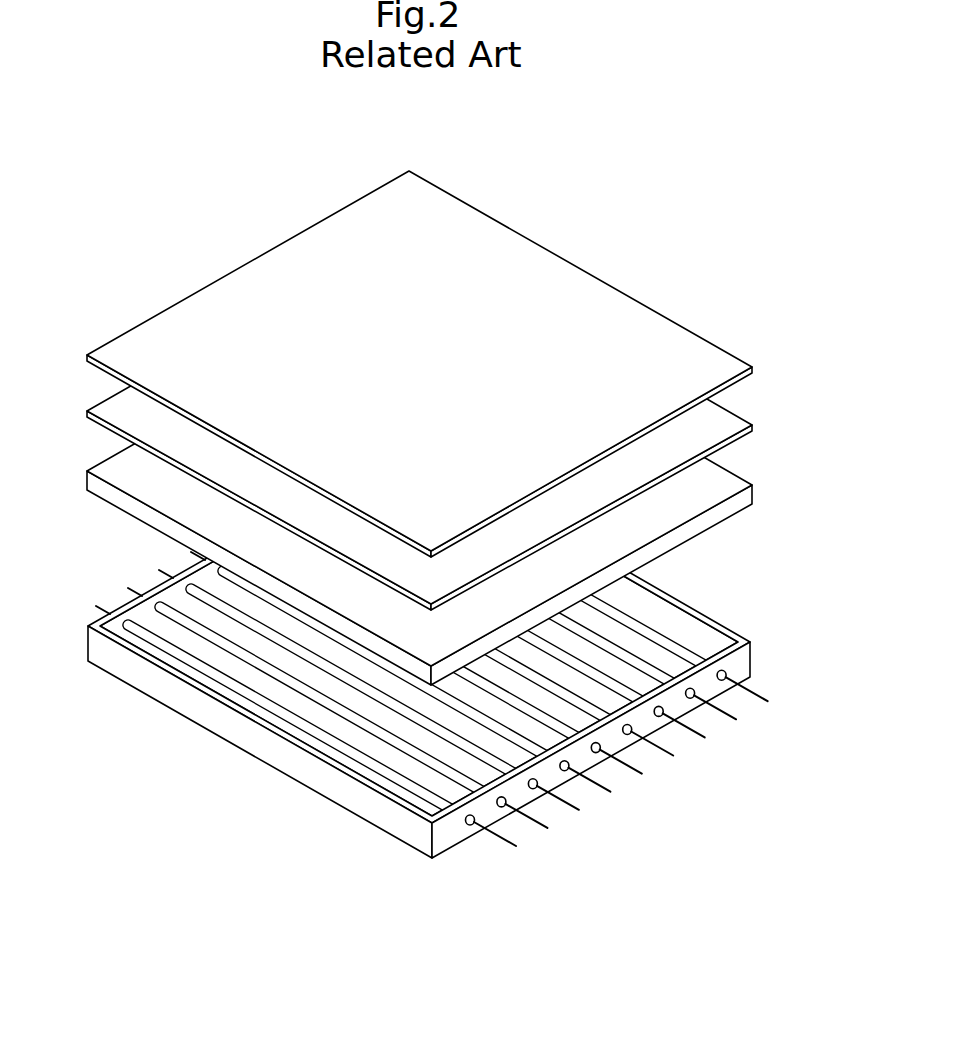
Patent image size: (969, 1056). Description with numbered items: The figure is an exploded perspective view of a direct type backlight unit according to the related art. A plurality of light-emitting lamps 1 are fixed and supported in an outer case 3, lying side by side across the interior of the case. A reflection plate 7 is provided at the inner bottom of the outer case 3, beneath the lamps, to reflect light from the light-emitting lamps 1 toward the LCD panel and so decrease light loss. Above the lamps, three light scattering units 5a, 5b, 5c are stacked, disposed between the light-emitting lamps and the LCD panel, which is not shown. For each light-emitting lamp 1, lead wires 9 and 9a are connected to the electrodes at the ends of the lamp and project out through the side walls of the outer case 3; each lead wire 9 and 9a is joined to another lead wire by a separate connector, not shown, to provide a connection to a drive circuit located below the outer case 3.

The light-emitting lamp 1 is at (312, 730).
The outer case 3 is at (745, 662).
The light scattering unit 5a is at (752, 492).
The light scattering unit 5b is at (752, 428).
The light scattering unit 5c is at (752, 369).
The reflection plate 7 is at (383, 753).
The lead wire 9 is at (569, 806).
The lead wire 9a is at (99, 606).